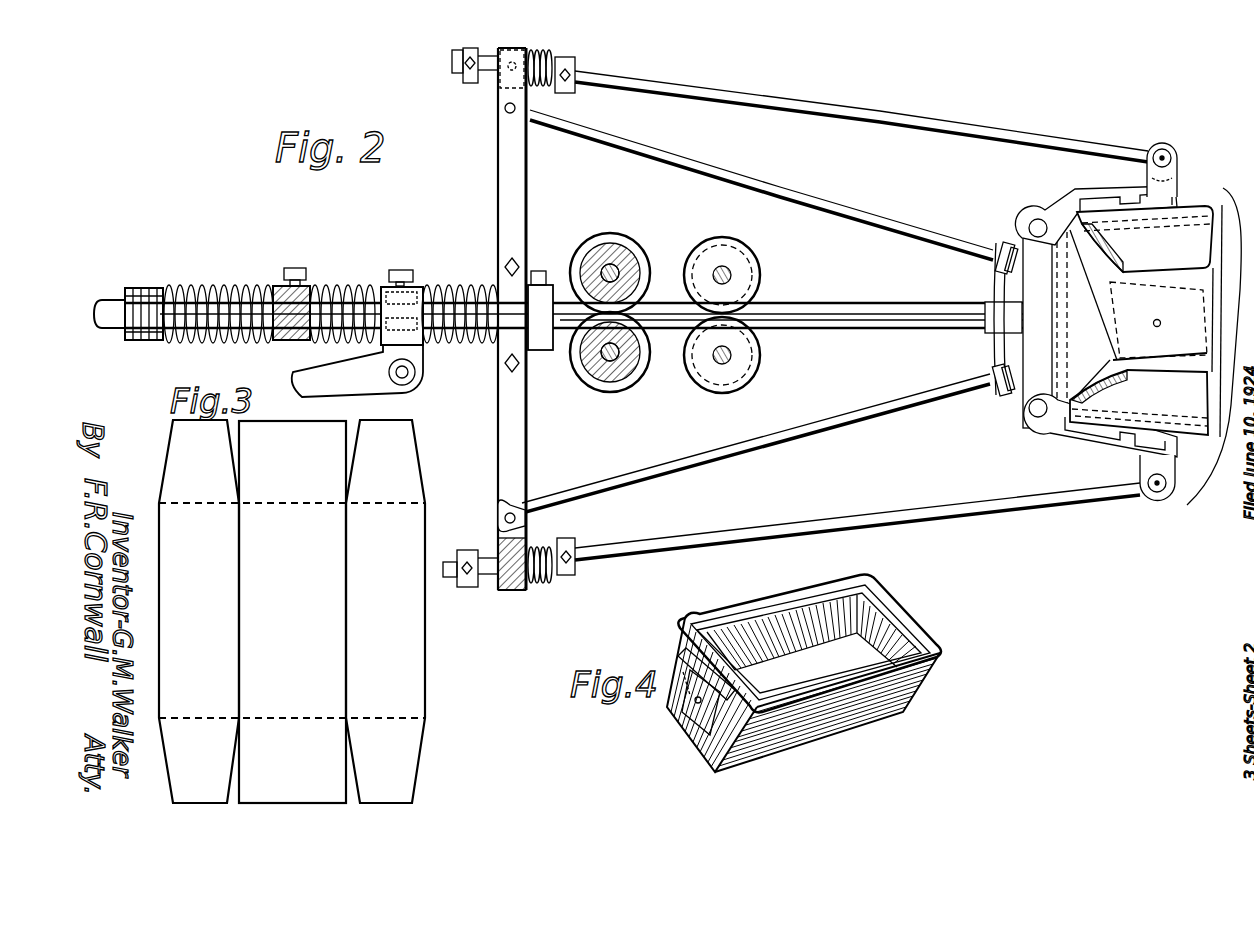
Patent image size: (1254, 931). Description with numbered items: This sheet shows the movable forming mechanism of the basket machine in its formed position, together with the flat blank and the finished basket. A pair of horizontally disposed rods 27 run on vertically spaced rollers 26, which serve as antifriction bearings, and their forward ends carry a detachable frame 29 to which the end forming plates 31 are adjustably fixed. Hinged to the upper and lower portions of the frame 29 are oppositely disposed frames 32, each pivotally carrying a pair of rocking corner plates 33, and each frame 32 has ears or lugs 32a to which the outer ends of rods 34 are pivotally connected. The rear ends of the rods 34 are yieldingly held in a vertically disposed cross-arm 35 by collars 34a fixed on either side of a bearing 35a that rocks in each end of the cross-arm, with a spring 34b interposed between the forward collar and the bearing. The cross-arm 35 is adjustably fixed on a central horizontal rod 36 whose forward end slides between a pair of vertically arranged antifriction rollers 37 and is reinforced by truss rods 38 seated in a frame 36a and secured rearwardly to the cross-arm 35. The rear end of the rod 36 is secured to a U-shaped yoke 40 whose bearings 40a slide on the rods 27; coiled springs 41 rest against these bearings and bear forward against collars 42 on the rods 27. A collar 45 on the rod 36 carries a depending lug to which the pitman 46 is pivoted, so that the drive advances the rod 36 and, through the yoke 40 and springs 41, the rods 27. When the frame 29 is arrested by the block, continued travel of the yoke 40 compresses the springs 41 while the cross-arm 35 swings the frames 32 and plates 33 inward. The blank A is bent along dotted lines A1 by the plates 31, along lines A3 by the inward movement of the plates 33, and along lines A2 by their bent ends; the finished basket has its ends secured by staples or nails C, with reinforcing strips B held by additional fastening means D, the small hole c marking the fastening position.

In FIG. 2, the rollers 26 is at (728, 252).
In FIG. 2, the horizontally disposed rods 27 is at (100, 300).
In FIG. 2, the detachable frame 29 is at (1037, 253).
In FIG. 2, the end forming plates 31 is at (1070, 343).
In FIG. 2, the frames 32 is at (1097, 197).
In FIG. 2, the ears or lugs 32a is at (1162, 143).
In FIG. 2, the rocking corner plates 33 is at (1146, 321).
In FIG. 2, the rods 34 is at (888, 115).
In FIG. 2, the collars 34a is at (462, 77).
In FIG. 2, the spring 34b is at (522, 97).
In FIG. 2, the cross-arm 35 is at (500, 204).
In FIG. 2, the bearing 35a is at (502, 542).
In FIG. 2, the horizontally disposed rod 36 is at (337, 295).
In FIG. 2, the frame 36a is at (992, 372).
In FIG. 2, the antifriction rollers 37 is at (618, 252).
In FIG. 2, the truss rods 38 is at (835, 207).
In FIG. 2, the U-shaped member or yoke 40 is at (277, 290).
In FIG. 2, the bearings 40a is at (150, 288).
In FIG. 2, the coiled springs 41 is at (466, 345).
In FIG. 2, the collars 42 is at (545, 352).
In FIG. 2, the collar 45 is at (413, 288).
In FIG. 2, the link or pitman 46 is at (293, 380).
In FIG. 2, the blank A is at (1190, 318).
In FIG. 3, the blank A is at (292, 612).
In FIG. 3, the dotted lines A' A1 is at (295, 496).
In FIG. 3, the lines A² A2 is at (199, 498).
In FIG. 3, the lines A³ A3 is at (199, 611).
In FIG. 4, the reinforcing strips B is at (830, 600).
In FIG. 4, the staples or nails C is at (696, 703).
In FIG. 2, the additional fastening means D is at (1211, 353).
In FIG. 4, the additional fastening means D is at (687, 647).
In FIG. 2, the hole c is at (1154, 326).